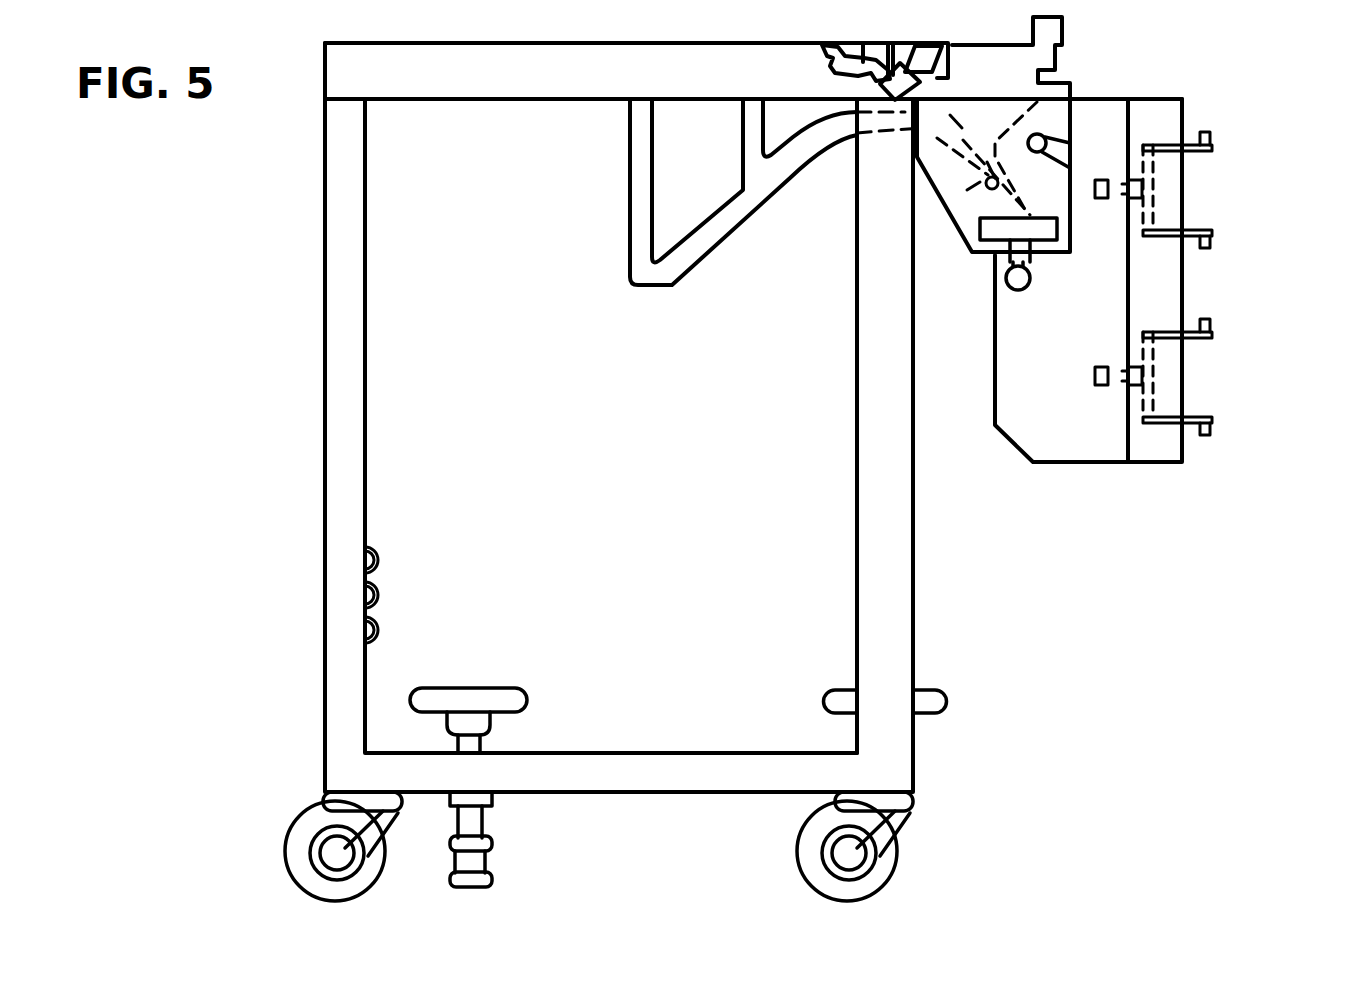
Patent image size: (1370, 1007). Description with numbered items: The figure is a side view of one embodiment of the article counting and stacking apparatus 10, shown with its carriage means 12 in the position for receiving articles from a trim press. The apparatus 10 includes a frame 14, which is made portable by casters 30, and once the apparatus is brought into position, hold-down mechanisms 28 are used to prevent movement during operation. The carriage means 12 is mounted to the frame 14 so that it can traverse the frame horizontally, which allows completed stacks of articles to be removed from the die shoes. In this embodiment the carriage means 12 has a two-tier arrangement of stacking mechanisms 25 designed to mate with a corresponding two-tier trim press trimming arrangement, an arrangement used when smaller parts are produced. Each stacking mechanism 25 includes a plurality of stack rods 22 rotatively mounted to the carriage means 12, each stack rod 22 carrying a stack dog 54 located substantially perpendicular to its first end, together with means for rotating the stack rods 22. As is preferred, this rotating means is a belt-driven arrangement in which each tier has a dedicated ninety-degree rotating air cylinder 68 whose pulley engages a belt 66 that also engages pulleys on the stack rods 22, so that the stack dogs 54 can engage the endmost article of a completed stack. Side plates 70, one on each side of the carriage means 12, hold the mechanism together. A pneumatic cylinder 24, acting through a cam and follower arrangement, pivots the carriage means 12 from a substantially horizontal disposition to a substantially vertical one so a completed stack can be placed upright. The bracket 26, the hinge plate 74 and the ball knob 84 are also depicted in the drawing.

The article counting and stacking apparatus 10 is at (753, 404).
The carriage means 12 is at (1127, 317).
The frame 14 is at (857, 352).
The stack rods 22 is at (1188, 152).
The pneumatic cylinder 24 is at (958, 174).
The stacking mechanism 25 is at (1202, 282).
The support bracket 26 is at (728, 232).
The hold-down mechanisms 28 is at (498, 688).
The casters 30 is at (297, 818).
The stack dog 54 is at (1210, 138).
The belt 66 is at (1140, 215).
The rotating air cylinder 68 is at (1100, 177).
The side plates 70 is at (992, 352).
The hinge plate 74 is at (968, 245).
The ball knob 84 is at (1030, 290).